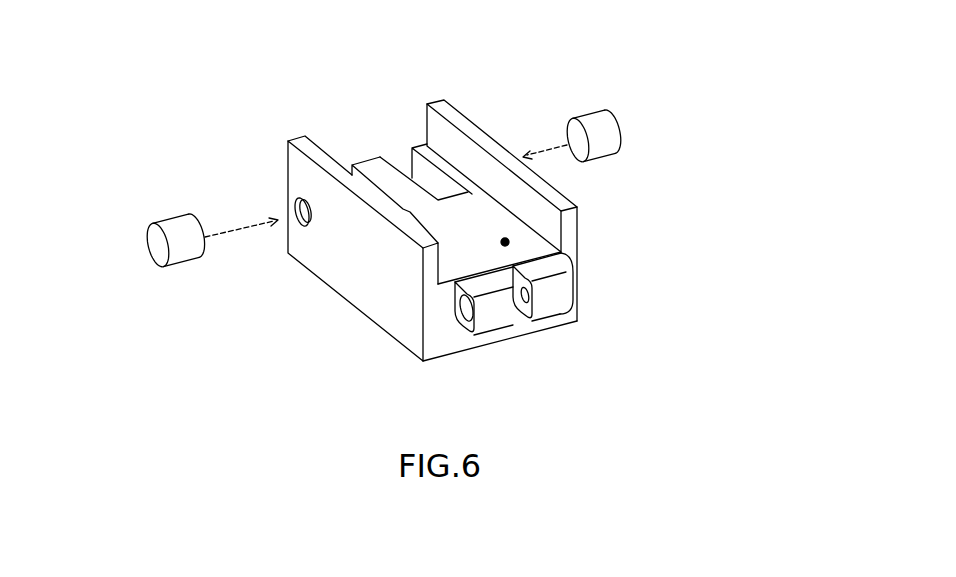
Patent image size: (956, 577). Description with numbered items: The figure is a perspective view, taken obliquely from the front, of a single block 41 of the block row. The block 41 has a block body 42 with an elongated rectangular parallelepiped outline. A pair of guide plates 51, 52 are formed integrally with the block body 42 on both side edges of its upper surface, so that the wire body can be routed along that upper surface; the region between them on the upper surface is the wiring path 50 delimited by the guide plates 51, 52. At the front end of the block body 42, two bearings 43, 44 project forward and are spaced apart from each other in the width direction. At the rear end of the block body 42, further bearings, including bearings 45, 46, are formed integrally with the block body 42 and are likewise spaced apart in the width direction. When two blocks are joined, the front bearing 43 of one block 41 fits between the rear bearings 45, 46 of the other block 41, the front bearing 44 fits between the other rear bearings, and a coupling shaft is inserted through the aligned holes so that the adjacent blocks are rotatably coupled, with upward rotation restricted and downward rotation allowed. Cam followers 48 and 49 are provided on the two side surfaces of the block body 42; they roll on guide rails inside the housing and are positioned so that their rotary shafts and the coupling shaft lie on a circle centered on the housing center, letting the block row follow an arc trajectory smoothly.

The block 41 is at (499, 216).
The block body 42 is at (492, 216).
The bearing 43 is at (550, 292).
The bearing 44 is at (490, 310).
The bearing 45 is at (427, 151).
The bearing 46 is at (377, 166).
The cam follower 48 is at (160, 245).
The cam follower 49 is at (627, 135).
The wiring path 50 is at (505, 242).
The guide plate 51 is at (501, 152).
The guide plate 52 is at (316, 146).